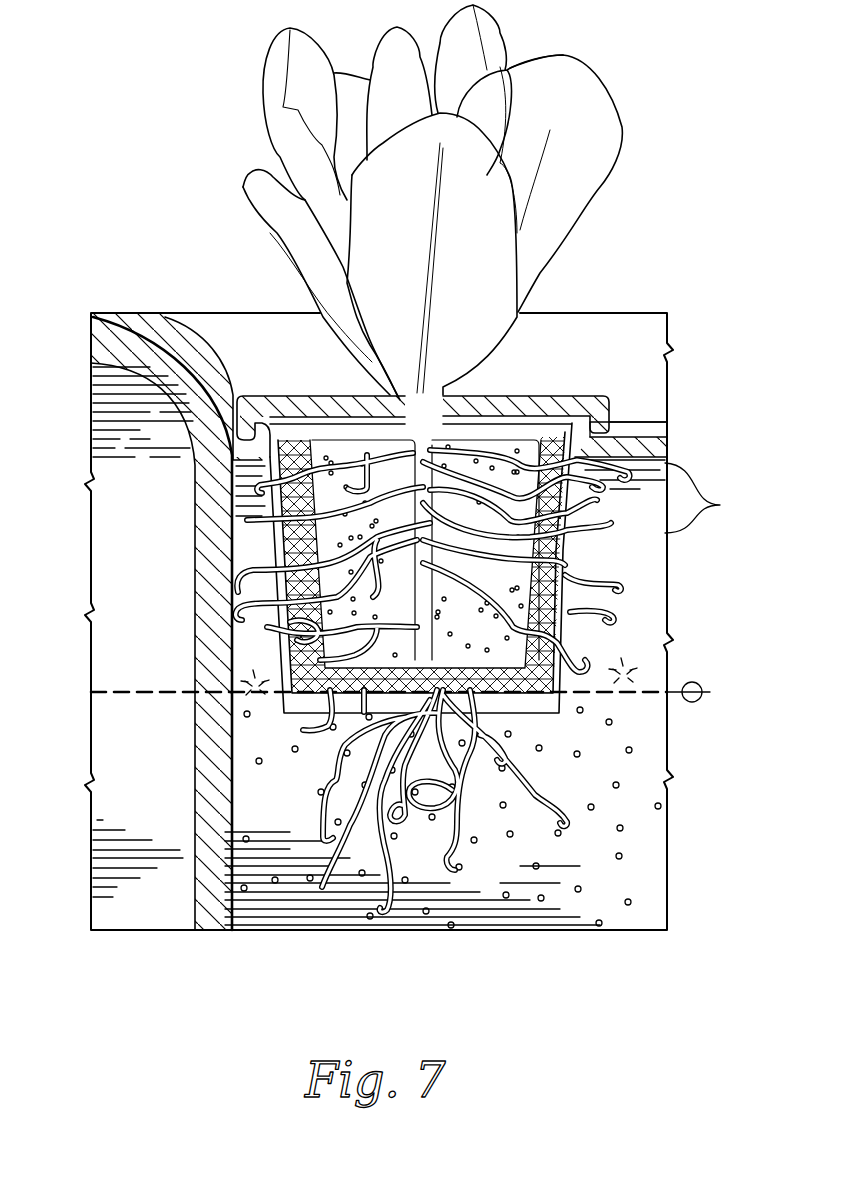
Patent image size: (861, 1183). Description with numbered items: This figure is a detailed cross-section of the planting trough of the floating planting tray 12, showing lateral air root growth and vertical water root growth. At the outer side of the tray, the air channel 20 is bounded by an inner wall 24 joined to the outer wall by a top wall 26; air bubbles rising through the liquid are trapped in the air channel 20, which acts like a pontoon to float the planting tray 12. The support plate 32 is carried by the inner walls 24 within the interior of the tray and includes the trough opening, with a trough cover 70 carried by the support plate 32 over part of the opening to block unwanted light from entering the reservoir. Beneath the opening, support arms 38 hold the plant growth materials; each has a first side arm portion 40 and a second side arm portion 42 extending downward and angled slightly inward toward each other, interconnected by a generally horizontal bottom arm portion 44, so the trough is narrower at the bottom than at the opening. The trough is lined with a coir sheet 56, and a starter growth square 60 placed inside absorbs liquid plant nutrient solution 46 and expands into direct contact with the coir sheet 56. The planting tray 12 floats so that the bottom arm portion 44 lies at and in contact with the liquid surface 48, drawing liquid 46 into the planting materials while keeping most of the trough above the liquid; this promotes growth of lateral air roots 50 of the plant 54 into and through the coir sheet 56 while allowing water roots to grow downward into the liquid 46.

The planting tray 12 is at (622, 313).
The air channel 20 is at (148, 883).
The inner walls 24 is at (210, 925).
The top wall 26 is at (166, 316).
The support plate 32 is at (660, 443).
The support arms 38 is at (572, 633).
The first side arm portion 40 is at (374, 484).
The second side arm portion 42 is at (563, 540).
The bottom arm portion 44 is at (565, 772).
The liquid plant nutrient solution 46 is at (635, 867).
The liquid surface 48 is at (645, 695).
The lateral air roots 50 is at (715, 498).
The plant 54 is at (575, 55).
The coir sheet 56 is at (560, 555).
The starter growth square 60 is at (335, 440).
The trough cover 70 is at (518, 398).